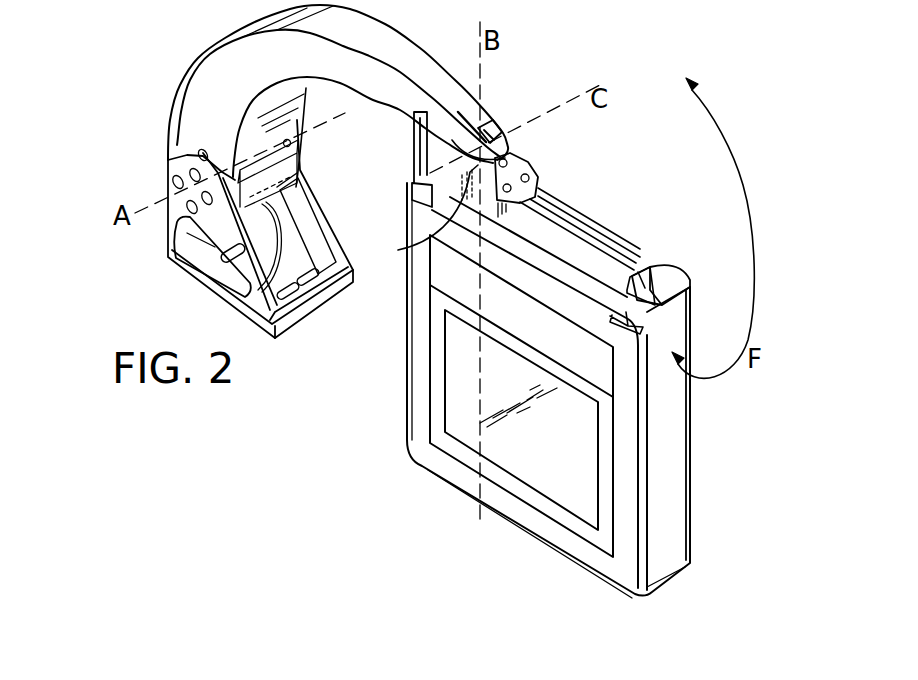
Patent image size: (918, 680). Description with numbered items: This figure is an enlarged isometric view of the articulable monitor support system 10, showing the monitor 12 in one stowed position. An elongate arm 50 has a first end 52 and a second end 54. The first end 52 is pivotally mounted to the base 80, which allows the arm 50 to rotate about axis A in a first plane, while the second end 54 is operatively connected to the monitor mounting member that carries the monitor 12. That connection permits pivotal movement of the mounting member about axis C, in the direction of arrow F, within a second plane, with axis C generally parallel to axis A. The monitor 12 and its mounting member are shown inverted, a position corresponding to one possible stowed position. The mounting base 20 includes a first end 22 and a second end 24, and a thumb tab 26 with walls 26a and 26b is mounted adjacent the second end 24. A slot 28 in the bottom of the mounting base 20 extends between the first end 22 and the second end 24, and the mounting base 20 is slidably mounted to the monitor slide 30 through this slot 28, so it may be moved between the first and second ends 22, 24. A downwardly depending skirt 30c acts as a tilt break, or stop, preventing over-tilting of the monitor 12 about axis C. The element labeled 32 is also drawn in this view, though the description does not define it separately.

The articulable monitor support system 10 is at (340, 422).
The monitor 12 is at (677, 457).
The mounting base 20 is at (437, 220).
The first end 22 is at (410, 192).
The second end 24 is at (680, 318).
The thumb tab 26 is at (673, 282).
The wall 26a is at (655, 284).
The wall 26b is at (640, 274).
The slot 28 is at (553, 232).
The monitor slide 30 is at (428, 247).
The downwardly depending skirt 30c is at (517, 162).
The hinge block 32 is at (528, 193).
The elongate arm 50 is at (204, 68).
The first end 52 is at (168, 155).
The second end 54 is at (476, 118).
The base 80 is at (307, 283).